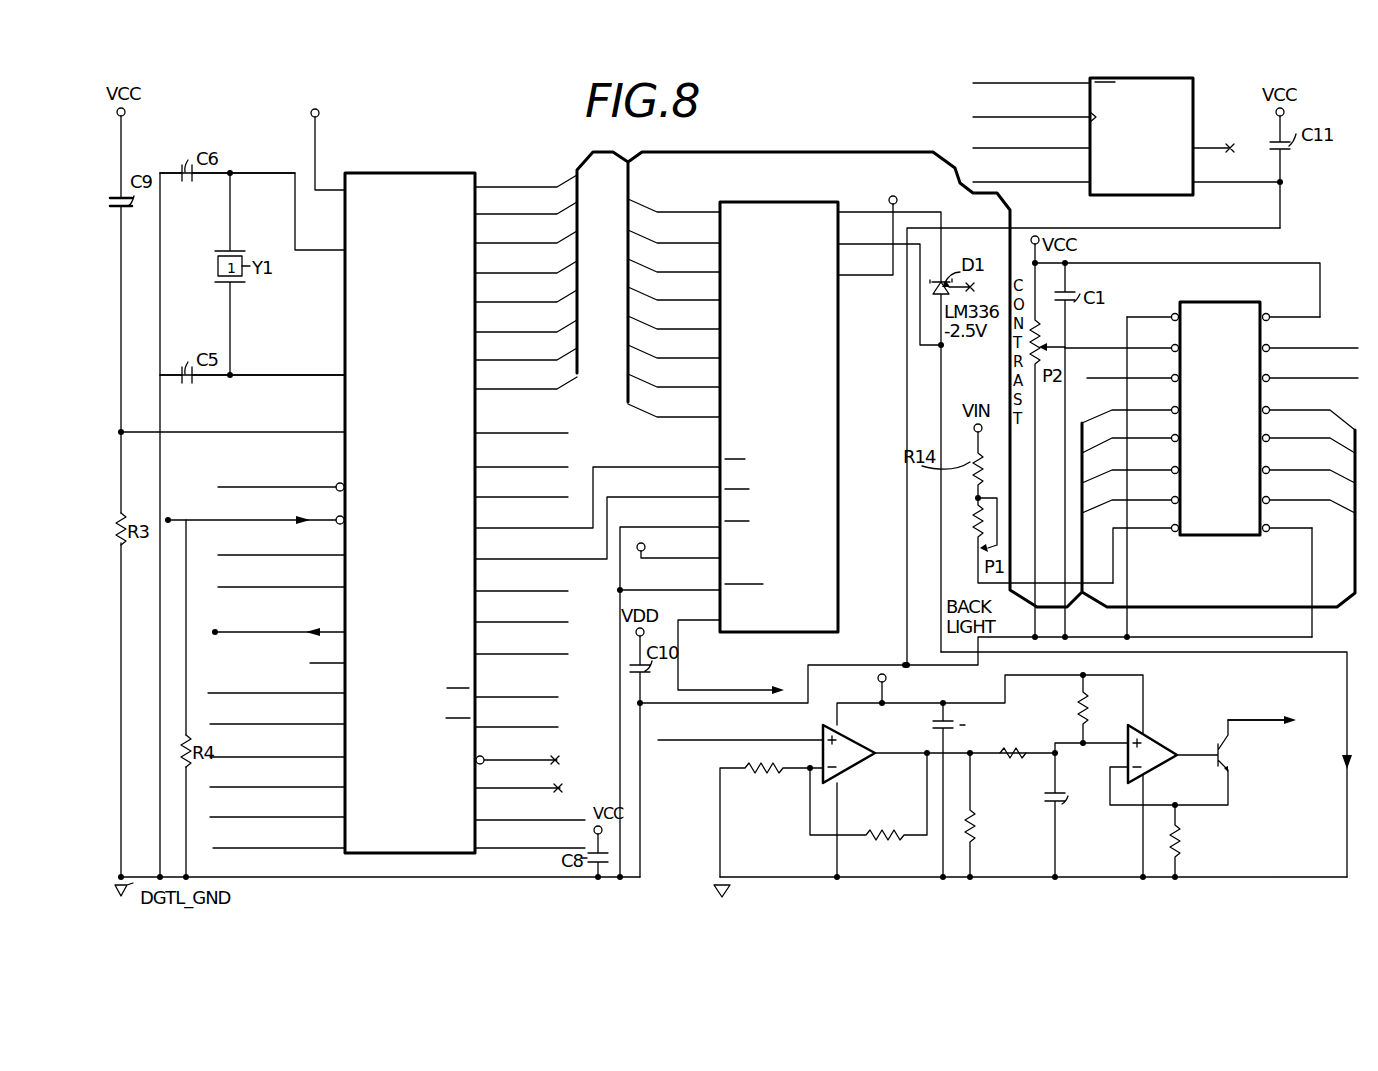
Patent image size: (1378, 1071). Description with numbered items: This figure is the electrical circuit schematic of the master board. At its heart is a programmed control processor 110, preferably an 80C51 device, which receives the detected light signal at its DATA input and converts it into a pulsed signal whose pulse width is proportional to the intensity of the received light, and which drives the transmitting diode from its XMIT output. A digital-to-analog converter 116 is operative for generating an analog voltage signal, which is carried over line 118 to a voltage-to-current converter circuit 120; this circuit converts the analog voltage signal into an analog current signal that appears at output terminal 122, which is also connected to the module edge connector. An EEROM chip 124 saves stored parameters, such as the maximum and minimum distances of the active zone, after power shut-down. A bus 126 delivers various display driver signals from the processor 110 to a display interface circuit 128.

The programmed control processor 110 is at (418, 177).
The digital-to-analog converter 116 is at (862, 337).
The line 118 is at (1337, 641).
The voltage-to-current converter circuit 120 is at (981, 879).
The analog output terminal 122 is at (1310, 726).
The EEROM chip 124 is at (1212, 114).
The bus 126 is at (875, 152).
The display interface circuit 128 is at (1338, 299).